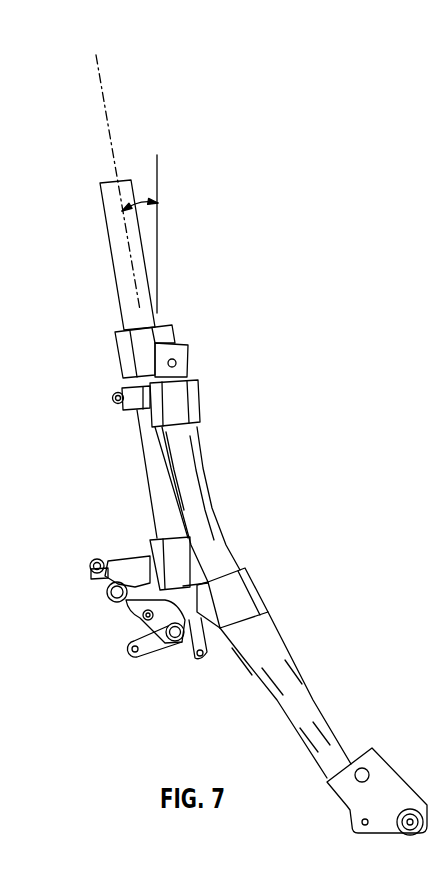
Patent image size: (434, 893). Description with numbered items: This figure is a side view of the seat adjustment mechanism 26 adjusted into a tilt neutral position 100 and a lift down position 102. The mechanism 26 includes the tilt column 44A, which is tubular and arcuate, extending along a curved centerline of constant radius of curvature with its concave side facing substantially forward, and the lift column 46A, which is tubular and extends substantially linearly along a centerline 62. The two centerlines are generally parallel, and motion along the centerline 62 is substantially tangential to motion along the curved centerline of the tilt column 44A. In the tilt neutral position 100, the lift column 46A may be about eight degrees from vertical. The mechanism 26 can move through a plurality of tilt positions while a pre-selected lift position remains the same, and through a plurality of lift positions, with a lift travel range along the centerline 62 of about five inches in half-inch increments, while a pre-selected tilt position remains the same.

The seat adjustment mechanism 26 is at (268, 192).
The centerline 62 is at (109, 137).
The lift column 46A is at (147, 477).
The tilt column 44A is at (297, 677).
The tilt neutral position 100 is at (281, 641).
The lift down position 102 is at (125, 500).